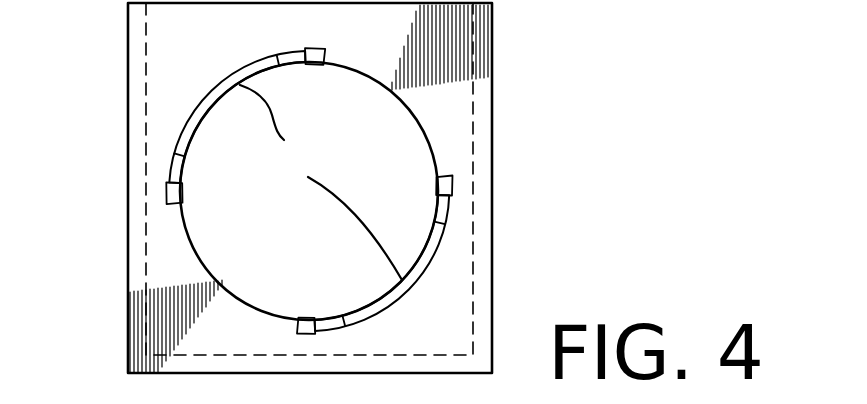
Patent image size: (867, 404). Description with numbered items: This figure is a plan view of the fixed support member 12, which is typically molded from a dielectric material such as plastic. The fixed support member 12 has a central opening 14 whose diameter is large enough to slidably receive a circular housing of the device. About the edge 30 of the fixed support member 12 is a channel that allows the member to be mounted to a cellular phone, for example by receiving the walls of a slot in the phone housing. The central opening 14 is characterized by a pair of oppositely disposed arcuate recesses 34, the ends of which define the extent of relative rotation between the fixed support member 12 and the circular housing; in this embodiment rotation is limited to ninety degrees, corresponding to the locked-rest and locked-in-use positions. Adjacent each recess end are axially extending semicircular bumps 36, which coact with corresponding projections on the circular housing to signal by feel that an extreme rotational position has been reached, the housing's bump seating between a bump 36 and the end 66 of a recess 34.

The fixed support member 12 is at (515, 138).
The central opening 14 is at (360, 73).
The edge 30 is at (128, 72).
The arcuate recess 34 is at (321, 182).
The semicircular bump 36 is at (328, 323).
The end of recess 66 is at (180, 182).